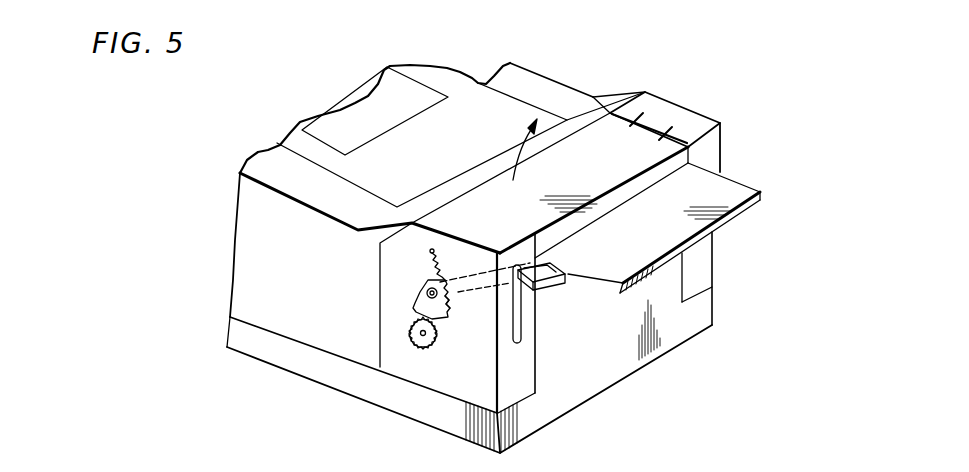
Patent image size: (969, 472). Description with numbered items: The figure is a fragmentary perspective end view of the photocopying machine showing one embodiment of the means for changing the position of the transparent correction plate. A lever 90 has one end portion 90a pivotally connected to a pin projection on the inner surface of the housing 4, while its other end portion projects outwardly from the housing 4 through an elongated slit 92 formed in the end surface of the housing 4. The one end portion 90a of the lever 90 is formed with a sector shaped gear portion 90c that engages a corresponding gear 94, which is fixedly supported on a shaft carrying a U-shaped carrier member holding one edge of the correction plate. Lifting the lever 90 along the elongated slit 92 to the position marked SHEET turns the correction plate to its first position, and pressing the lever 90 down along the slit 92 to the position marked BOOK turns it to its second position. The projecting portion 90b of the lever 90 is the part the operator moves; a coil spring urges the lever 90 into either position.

The housing 4 is at (413, 368).
The lever 90 is at (480, 283).
The one end portion of the lever 90a is at (415, 303).
The selector knob 90b is at (545, 264).
The sector shaped gear portion 90c is at (447, 317).
The elongated slit 92 is at (517, 318).
The gear 94 is at (405, 333).